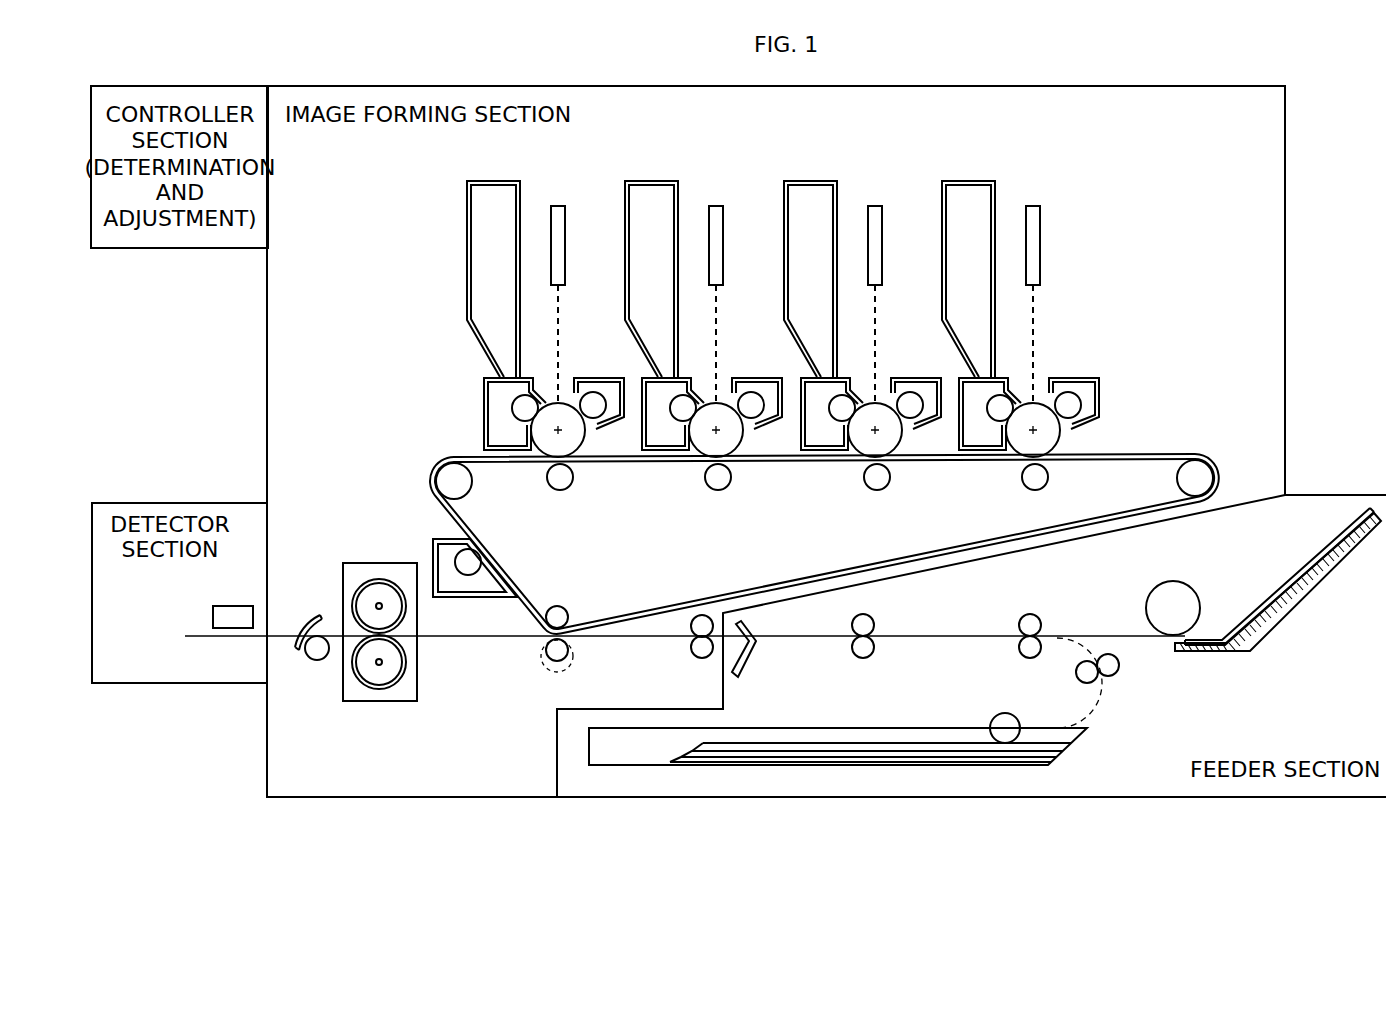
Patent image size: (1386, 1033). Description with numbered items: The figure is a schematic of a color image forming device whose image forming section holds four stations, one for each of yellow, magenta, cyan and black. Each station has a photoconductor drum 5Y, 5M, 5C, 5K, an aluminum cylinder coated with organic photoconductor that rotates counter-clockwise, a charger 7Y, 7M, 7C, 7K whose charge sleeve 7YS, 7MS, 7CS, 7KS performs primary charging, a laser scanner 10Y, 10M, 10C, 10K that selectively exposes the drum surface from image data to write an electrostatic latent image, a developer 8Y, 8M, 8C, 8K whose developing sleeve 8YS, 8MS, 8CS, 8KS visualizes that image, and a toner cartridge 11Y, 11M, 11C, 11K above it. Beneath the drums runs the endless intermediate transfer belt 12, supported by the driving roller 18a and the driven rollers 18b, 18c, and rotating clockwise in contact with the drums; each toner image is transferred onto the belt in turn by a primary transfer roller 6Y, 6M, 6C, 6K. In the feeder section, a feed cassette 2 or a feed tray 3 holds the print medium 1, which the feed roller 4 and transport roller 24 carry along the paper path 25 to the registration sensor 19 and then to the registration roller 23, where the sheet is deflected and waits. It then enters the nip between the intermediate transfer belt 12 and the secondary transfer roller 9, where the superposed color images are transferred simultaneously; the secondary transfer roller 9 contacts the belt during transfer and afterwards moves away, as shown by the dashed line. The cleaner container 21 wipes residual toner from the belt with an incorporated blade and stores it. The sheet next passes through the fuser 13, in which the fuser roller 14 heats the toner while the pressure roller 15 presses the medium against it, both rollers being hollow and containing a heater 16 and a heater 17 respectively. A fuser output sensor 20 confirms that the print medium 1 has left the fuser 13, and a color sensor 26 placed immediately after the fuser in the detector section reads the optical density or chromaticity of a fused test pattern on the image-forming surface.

The print medium 1 is at (1313, 560).
The feed cassette 2 is at (914, 741).
The feed tray 3 is at (1310, 594).
The feed roller 4 is at (1173, 598).
The photoconductor drum 5Y is at (577, 446).
The photoconductor drum 5M is at (730, 454).
The photoconductor drum 5C is at (887, 454).
The photoconductor drum 5K is at (1057, 431).
The primary transfer roller 6Y is at (560, 491).
The primary transfer roller 6M is at (721, 498).
The primary transfer roller 6C is at (878, 498).
The primary transfer roller 6K is at (1058, 484).
The charger 7Y is at (617, 392).
The charger 7M is at (757, 357).
The charger 7C is at (916, 357).
The charger 7K is at (1074, 357).
The charge sleeve 7YS is at (593, 397).
The charge sleeve 7MS is at (747, 381).
The charge sleeve 7CS is at (904, 381).
The charge sleeve 7KS is at (1062, 381).
The developer 8Y is at (484, 444).
The developer 8M is at (654, 416).
The developer 8C is at (813, 416).
The developer 8K is at (971, 416).
The developing sleeve 8YS is at (523, 416).
The developing sleeve 8MS is at (674, 450).
The developing sleeve 8CS is at (832, 450).
The developing sleeve 8KS is at (990, 450).
The secondary transfer roller 9 is at (568, 647).
The laser scanner 10Y is at (558, 206).
The laser scanner 10M is at (727, 286).
The laser scanner 10C is at (884, 286).
The laser scanner 10K is at (1042, 286).
The toner cartridge 11Y is at (493, 181).
The toner cartridge 11M is at (653, 260).
The toner cartridge 11C is at (810, 260).
The toner cartridge 11K is at (968, 260).
The intermediate transfer belt 12 is at (690, 604).
The fuser 13 is at (418, 686).
The fuser roller 14 is at (386, 579).
The pressure roller 15 is at (378, 690).
The heater 16 is at (378, 605).
The heater 17 is at (381, 662).
The driving roller 18a is at (1201, 480).
The driven roller 18b is at (450, 482).
The driven roller 18c is at (557, 606).
The registration sensor 19 is at (752, 647).
The fuser output sensor 20 is at (308, 619).
The cleaner container 21 is at (457, 586).
The registration roller 23 is at (700, 656).
The transport roller 24 is at (874, 620).
The paper path 25 is at (1105, 637).
The color sensor 26 is at (233, 606).